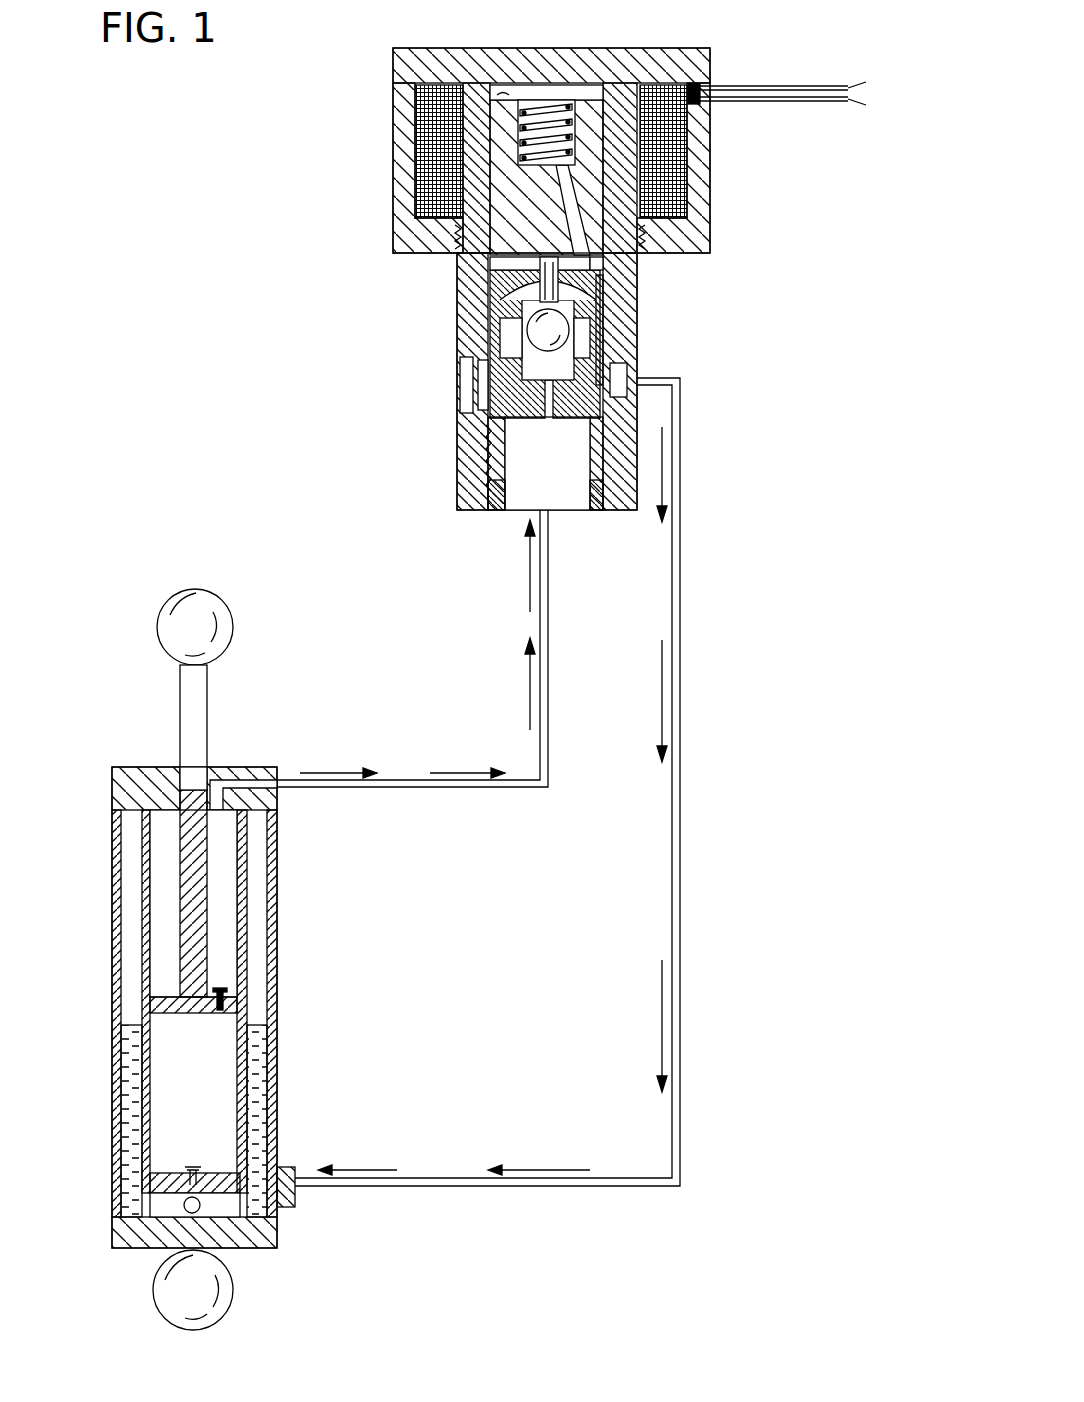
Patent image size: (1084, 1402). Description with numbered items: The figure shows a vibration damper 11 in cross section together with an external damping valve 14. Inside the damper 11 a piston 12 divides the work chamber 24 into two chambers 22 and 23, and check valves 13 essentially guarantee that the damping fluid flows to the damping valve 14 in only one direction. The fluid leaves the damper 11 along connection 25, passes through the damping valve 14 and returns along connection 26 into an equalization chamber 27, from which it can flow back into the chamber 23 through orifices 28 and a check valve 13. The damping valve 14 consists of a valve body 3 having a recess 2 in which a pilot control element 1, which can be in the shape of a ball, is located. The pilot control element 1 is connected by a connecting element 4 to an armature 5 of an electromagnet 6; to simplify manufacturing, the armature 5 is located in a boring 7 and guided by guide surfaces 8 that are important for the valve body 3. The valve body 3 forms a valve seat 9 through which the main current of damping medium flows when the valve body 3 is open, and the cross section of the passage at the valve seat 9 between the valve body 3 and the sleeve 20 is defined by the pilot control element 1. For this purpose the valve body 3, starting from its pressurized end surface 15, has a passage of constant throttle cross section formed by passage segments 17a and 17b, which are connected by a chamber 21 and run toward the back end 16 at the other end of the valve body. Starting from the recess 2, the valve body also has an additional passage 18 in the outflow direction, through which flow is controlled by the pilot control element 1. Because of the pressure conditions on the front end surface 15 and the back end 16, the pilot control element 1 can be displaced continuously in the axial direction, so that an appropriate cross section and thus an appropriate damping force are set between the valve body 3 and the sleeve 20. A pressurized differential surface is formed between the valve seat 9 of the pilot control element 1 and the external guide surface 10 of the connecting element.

The pilot control element 1 is at (567, 322).
The recess 2 is at (600, 348).
The valve body 3 is at (612, 415).
The connecting element 4 is at (585, 305).
The armature 5 is at (597, 105).
The electromagnet 6 is at (664, 88).
The boring 7 is at (487, 262).
The guide surfaces 8 is at (485, 290).
The valve seat 9 is at (617, 440).
The external guide surface 10 is at (465, 328).
The vibration damper 11 is at (100, 1122).
The piston 12 is at (186, 1018).
The check valves 13 is at (222, 990).
The damping valve 14 is at (438, 389).
The pressurized end surface 15 is at (468, 458).
The back end 16 is at (602, 266).
The passage segment 17a is at (547, 420).
The passage segment 17b is at (592, 290).
The additional passage 18 is at (492, 355).
The sleeve 20 is at (490, 510).
The chamber 21 is at (466, 428).
The chamber 22 is at (165, 870).
The chamber 23 is at (165, 1143).
The work chamber 24 is at (145, 825).
The connection 25 is at (520, 783).
The connection 26 is at (672, 915).
The equalization chamber 27 is at (258, 1080).
The orifices 28 is at (238, 1206).